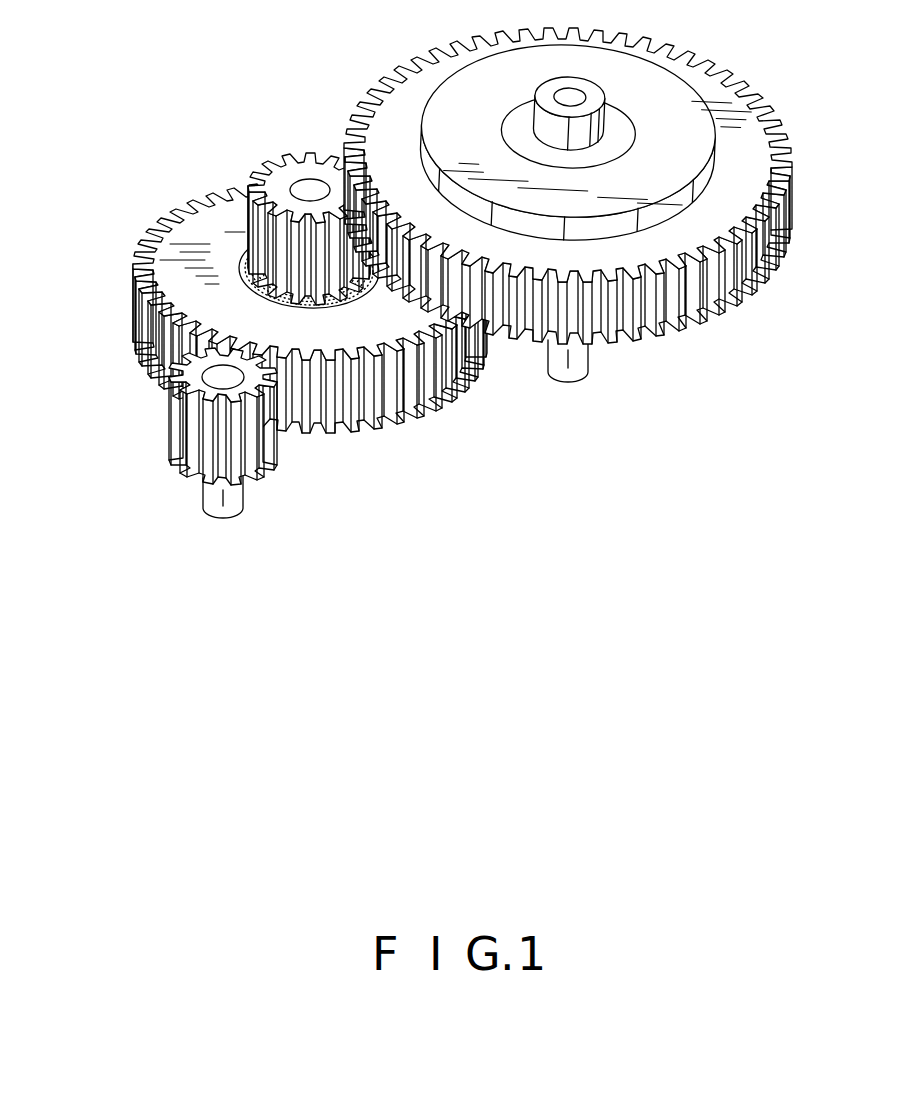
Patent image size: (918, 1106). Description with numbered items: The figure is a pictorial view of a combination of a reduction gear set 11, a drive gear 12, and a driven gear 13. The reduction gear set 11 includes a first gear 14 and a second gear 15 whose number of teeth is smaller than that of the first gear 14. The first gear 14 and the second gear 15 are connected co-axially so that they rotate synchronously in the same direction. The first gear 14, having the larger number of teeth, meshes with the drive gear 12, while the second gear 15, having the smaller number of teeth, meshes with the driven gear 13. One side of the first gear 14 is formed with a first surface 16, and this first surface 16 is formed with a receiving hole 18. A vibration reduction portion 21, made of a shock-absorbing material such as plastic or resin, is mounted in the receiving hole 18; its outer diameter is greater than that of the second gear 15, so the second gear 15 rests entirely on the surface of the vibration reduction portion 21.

The reduction gear set 11 is at (290, 141).
The drive gear 12 is at (178, 444).
The driven gear 13 is at (662, 293).
The first gear 14 is at (135, 317).
The second gear 15 is at (250, 225).
The first surface 16 is at (178, 261).
The receiving hole 18 is at (321, 306).
The vibration reduction portion 21 is at (350, 305).